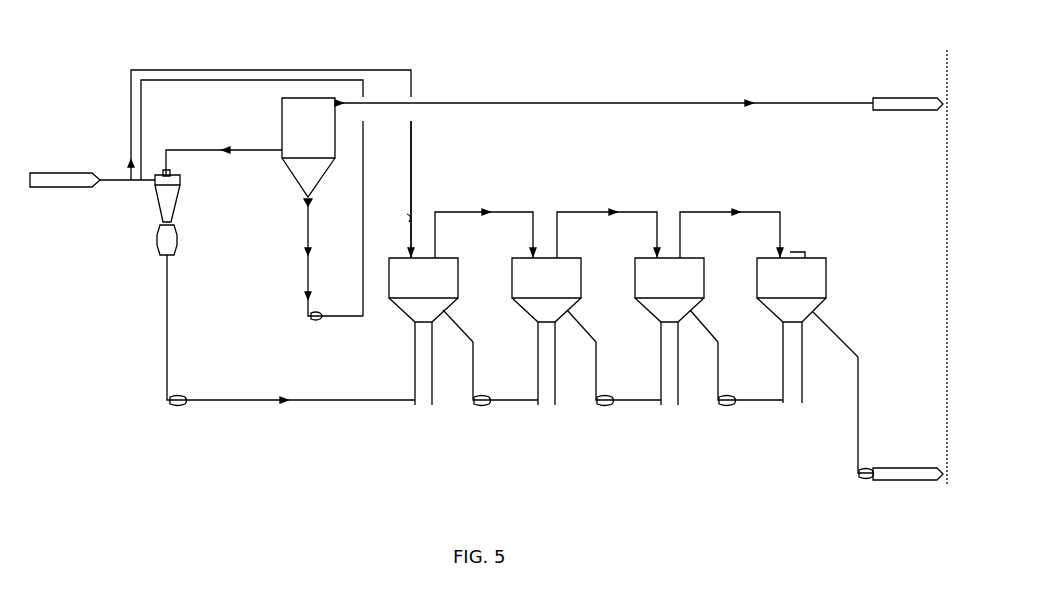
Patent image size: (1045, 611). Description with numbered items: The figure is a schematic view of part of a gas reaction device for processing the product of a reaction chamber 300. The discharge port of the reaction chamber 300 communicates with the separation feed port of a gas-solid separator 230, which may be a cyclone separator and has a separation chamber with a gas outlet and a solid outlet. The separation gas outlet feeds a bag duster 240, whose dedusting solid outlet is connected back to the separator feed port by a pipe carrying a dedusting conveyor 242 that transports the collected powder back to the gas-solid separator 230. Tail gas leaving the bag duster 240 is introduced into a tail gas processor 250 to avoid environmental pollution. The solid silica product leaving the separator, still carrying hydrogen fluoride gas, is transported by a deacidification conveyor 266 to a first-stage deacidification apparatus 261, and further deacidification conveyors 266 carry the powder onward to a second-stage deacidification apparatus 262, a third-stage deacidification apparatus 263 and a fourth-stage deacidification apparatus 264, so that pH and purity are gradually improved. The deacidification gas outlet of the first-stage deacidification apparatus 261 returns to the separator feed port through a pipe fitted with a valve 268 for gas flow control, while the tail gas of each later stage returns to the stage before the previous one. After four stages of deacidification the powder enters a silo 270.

The reaction chamber 300 is at (63, 183).
The gas-solid separator 230 is at (163, 213).
The bag duster 240 is at (293, 133).
The dedusting conveyor 242 is at (318, 322).
The tail gas processor 250 is at (898, 112).
The valve 268 is at (411, 218).
The first-stage deacidification apparatus 261 is at (422, 390).
The second-stage deacidification apparatus 262 is at (543, 390).
The third-stage deacidification apparatus 263 is at (672, 380).
The fourth-stage deacidification apparatus 264 is at (796, 380).
The deacidification conveyor 266 is at (178, 405).
The silo 270 is at (897, 480).